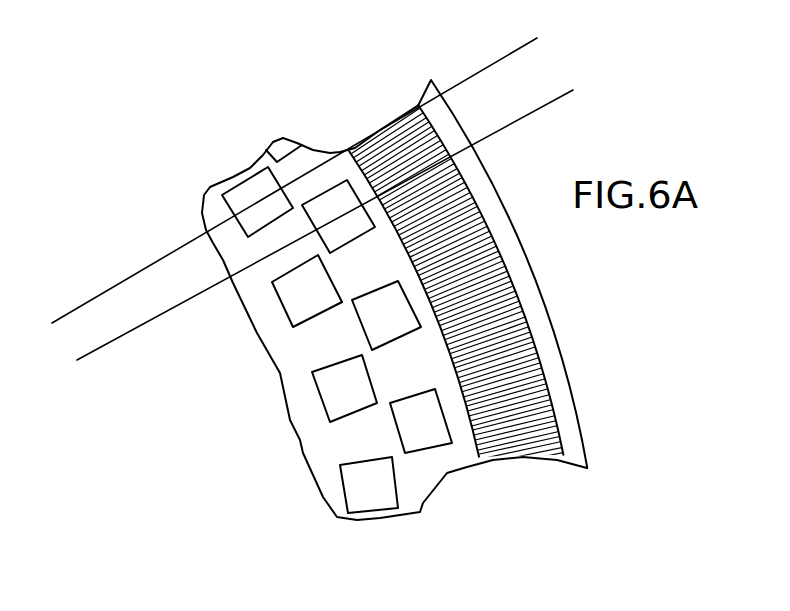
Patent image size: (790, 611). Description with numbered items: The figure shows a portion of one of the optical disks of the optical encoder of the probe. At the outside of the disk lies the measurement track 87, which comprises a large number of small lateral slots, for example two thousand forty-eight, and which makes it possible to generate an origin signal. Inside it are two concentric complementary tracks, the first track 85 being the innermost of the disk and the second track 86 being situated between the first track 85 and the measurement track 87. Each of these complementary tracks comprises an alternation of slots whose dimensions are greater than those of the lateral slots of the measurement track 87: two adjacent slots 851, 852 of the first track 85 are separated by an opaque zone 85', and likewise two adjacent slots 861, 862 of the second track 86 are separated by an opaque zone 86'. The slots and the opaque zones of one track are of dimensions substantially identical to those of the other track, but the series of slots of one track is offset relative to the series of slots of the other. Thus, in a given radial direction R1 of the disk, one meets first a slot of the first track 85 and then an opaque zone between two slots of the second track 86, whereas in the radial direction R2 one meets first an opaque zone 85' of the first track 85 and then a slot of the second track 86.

The radial direction R1 is at (311, 175).
The radial direction R2 is at (341, 219).
The first track 85 is at (311, 359).
The opaque zone 85' is at (394, 312).
The slot 851 is at (357, 498).
The slot 852 is at (333, 390).
The second track 86 is at (457, 306).
The opaque zone 86' is at (490, 303).
The slot 861 is at (420, 410).
The slot 862 is at (375, 308).
The measurement track 87 is at (563, 470).